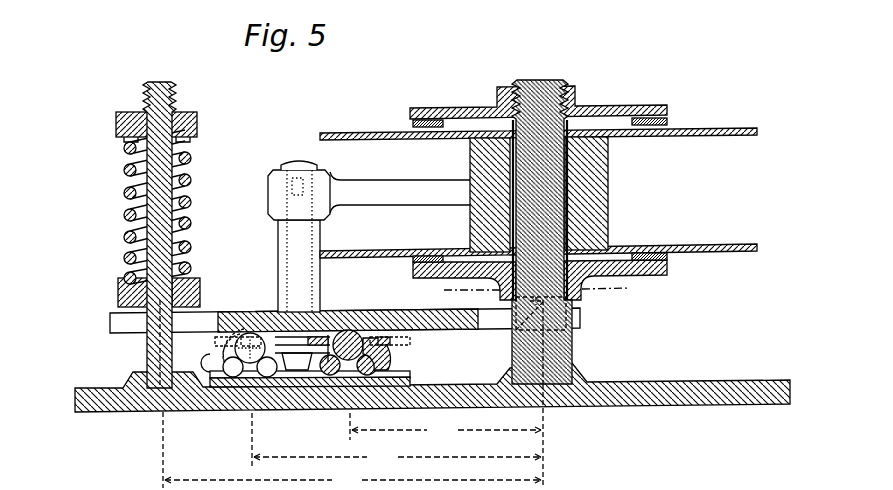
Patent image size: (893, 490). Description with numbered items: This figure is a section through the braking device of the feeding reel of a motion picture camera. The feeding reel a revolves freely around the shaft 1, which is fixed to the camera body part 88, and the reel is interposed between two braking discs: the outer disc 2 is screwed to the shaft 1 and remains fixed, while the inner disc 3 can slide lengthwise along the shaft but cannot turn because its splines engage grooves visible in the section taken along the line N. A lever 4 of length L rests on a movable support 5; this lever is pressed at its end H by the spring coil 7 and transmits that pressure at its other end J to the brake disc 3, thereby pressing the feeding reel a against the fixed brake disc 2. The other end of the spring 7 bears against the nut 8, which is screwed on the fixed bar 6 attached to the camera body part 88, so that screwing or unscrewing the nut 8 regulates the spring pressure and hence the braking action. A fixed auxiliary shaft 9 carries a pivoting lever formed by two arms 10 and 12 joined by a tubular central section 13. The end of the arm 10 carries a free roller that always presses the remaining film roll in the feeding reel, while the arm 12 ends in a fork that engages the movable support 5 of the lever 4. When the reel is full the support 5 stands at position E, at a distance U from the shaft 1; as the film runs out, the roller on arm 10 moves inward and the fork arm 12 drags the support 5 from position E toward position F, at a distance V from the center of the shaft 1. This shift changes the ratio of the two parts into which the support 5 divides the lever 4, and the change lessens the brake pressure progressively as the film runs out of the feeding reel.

The shaft 1 is at (542, 219).
The outer brake disc 2 is at (538, 104).
The inner brake disc 3 is at (667, 264).
The lever 4 is at (391, 305).
The movable support 5 is at (387, 358).
The fixed bar 6 is at (161, 81).
The spring coil 7 is at (124, 238).
The nut 8 is at (116, 121).
The fixed auxiliary shaft 9 is at (301, 161).
The arm 10 is at (400, 192).
The arm 12 is at (388, 338).
The tubular central section 13 is at (278, 266).
The camera body part 88 is at (713, 390).
The lever end H is at (345, 322).
The section line N— N is at (536, 293).
The lever end J is at (500, 334).
The feeding reel a is at (538, 193).
The position of the movable support F is at (207, 450).
The position of the movable support E is at (436, 436).
The distance U is at (446, 431).
The distance V is at (397, 458).
The lever length L is at (353, 479).